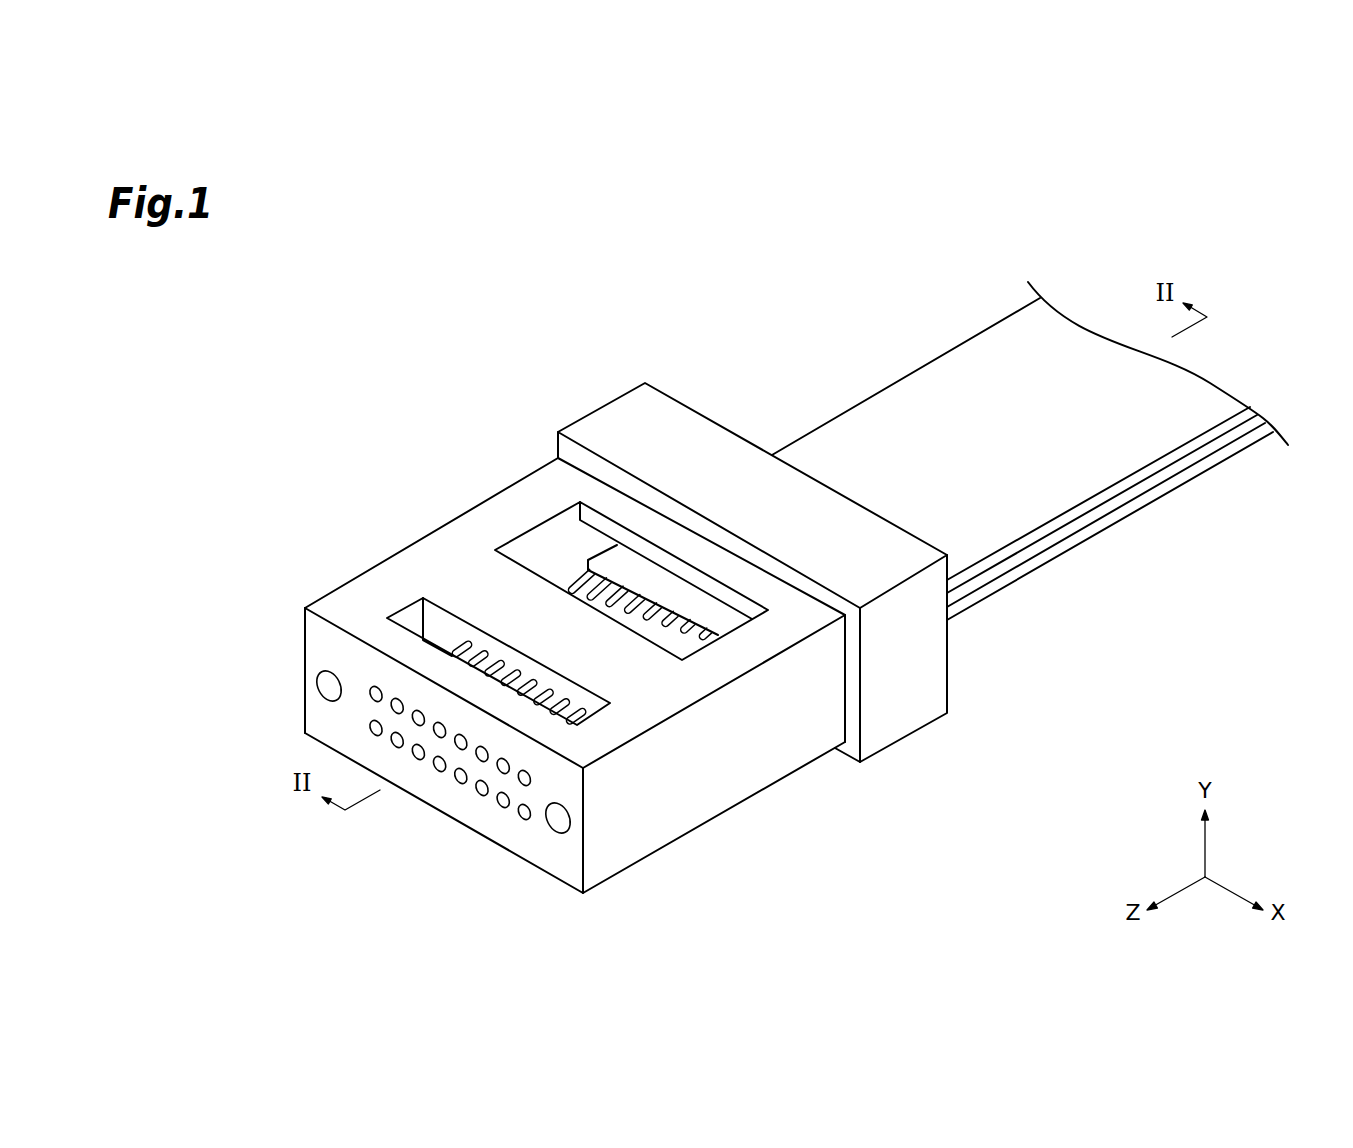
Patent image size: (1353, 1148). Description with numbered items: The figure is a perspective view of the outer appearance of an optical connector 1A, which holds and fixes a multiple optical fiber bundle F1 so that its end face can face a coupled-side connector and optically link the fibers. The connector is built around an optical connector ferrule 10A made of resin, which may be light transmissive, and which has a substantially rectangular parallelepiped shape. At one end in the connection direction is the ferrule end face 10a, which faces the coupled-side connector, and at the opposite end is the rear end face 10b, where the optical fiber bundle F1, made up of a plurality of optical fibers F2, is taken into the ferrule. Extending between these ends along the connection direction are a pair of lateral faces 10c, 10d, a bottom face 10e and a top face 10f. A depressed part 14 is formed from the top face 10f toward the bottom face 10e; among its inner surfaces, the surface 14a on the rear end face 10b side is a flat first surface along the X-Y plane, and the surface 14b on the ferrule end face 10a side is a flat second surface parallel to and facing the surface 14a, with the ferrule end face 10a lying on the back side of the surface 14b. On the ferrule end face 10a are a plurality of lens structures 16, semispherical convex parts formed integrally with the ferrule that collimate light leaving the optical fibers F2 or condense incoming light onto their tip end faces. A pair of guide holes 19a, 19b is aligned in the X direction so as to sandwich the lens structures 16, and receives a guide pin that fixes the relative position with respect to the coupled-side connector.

The optical connector 1A is at (548, 379).
The optical connector ferrule 10A is at (450, 513).
The ferrule end face 10a is at (417, 733).
The rear end face 10b is at (706, 407).
The lateral face 10c is at (333, 588).
The lateral face 10d is at (753, 777).
The bottom face 10e is at (667, 848).
The top face 10f is at (491, 523).
The depressed part 14 is at (490, 626).
The surface 14a is at (558, 687).
The surface 14b is at (453, 652).
The lens structures 16 is at (503, 803).
The guide hole 19a is at (328, 685).
The guide hole 19b is at (558, 818).
The optical fiber bundle F1 is at (890, 375).
The optical fibers F2 is at (578, 586).